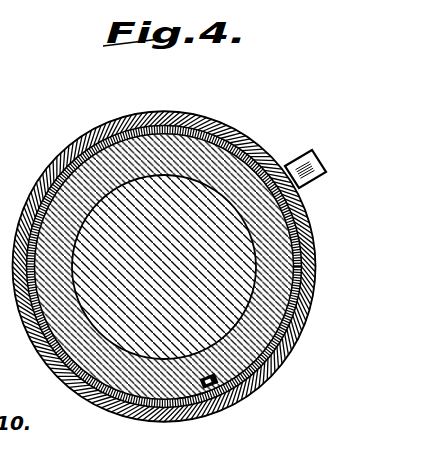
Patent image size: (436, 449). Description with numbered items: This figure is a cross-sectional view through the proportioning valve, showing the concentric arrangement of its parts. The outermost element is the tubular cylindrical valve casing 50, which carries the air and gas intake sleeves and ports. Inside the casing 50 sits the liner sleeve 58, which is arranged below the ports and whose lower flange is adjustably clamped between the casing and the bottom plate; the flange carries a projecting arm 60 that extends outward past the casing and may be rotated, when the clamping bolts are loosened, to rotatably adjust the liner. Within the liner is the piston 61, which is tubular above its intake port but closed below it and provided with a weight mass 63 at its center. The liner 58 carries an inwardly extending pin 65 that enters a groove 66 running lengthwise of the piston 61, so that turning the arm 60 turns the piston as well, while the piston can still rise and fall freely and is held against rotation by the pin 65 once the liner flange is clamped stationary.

The valve casing 50 is at (218, 128).
The liner sleeve 58 is at (132, 137).
The projecting arm 60 is at (320, 169).
The piston 61 is at (268, 240).
The weight mass 63 is at (240, 255).
The pin 65 is at (211, 389).
The groove 66 is at (193, 394).